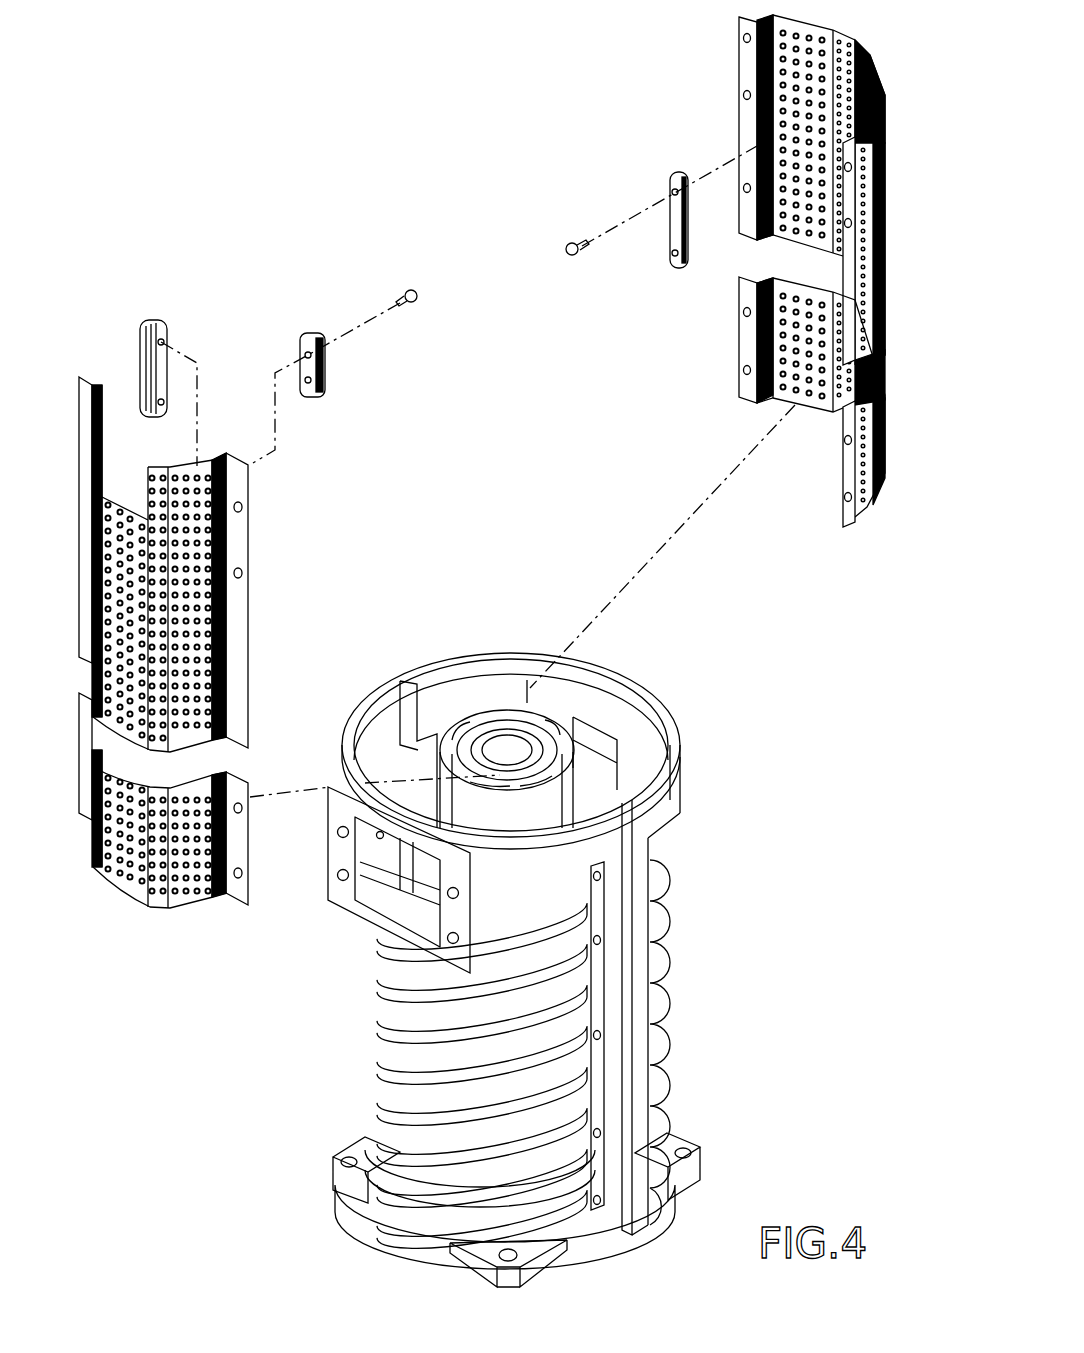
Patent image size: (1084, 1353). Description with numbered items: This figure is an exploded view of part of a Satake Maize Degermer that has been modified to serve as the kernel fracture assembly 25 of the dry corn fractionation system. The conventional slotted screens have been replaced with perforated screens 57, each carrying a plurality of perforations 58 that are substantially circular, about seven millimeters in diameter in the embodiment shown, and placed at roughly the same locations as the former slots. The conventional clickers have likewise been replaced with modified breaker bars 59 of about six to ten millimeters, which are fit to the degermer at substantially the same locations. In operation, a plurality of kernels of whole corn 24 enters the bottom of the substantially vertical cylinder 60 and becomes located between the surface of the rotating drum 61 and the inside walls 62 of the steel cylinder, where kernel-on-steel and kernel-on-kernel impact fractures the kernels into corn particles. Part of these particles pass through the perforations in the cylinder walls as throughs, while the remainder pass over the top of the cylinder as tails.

The plurality of kernels of whole corn 24 is at (580, 1255).
The kernel fracture assembly 25 is at (195, 110).
The perforated screens 57 is at (80, 518).
The perforations 58 is at (113, 550).
The modified breaker bars 59 is at (145, 328).
The substantially vertical cylinder 60 is at (672, 936).
The rotating drum 61 is at (538, 762).
The inside walls 62 is at (468, 589).